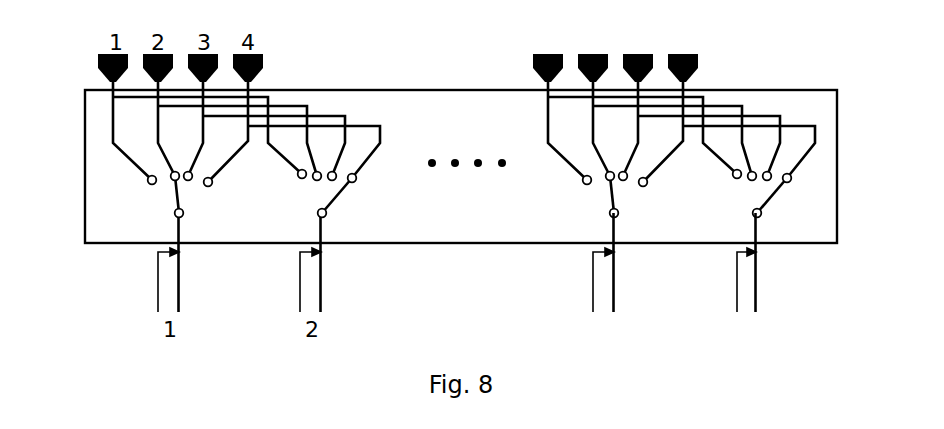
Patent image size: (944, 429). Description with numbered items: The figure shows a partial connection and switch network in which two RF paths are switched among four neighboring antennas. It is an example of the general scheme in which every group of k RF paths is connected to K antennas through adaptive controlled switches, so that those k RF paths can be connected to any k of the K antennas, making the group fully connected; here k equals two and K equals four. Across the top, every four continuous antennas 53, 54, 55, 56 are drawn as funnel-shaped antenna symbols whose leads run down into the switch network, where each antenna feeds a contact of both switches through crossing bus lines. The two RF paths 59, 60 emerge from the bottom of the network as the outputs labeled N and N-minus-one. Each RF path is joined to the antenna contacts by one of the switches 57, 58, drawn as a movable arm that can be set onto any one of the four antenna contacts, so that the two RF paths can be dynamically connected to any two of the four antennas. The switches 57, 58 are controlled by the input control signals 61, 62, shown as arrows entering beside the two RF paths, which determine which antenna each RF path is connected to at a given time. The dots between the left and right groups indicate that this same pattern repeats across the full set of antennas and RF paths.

The antenna 53 is at (729, 94).
The antenna 54 is at (701, 91).
The antenna 55 is at (664, 91).
The antenna 56 is at (634, 93).
The switch 57 is at (768, 196).
The switch 58 is at (623, 200).
The RF path 59 is at (773, 277).
The RF path 60 is at (622, 277).
The input control signal 61 is at (723, 280).
The input control signal 62 is at (584, 280).